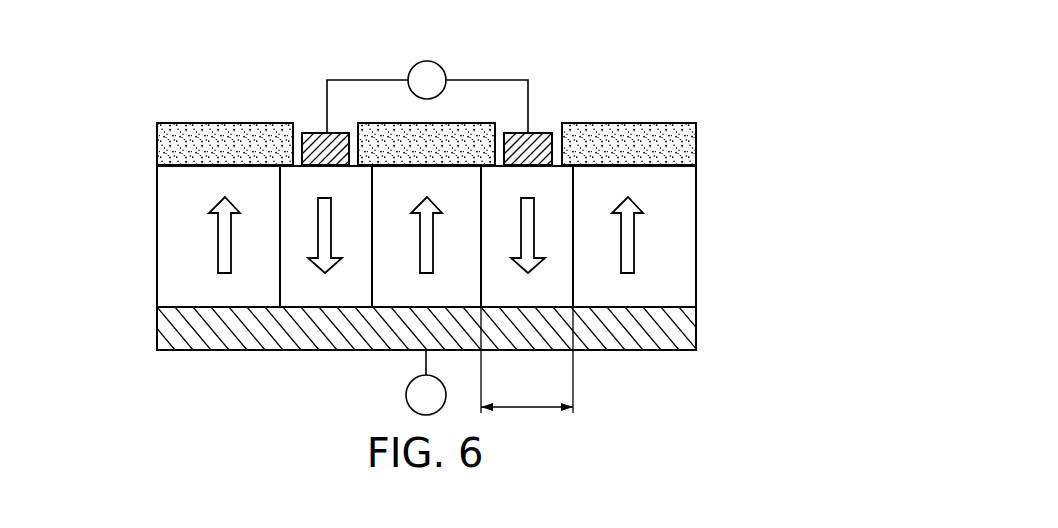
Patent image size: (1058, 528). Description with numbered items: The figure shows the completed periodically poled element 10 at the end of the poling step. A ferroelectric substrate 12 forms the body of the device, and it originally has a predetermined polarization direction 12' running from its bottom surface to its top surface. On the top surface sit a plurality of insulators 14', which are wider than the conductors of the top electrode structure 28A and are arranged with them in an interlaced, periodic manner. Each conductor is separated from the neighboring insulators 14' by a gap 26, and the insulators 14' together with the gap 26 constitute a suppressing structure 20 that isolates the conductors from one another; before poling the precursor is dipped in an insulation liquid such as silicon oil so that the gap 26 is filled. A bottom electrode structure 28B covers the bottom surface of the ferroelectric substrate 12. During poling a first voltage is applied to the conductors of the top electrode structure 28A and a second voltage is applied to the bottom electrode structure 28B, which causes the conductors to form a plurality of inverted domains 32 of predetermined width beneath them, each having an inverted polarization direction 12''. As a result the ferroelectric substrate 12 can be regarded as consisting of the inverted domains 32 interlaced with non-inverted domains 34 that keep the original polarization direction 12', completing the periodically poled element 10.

The periodically poled element 10 is at (672, 77).
The ferroelectric substrate 12 is at (424, 285).
The predetermined polarization direction 12' is at (365, 235).
The inverted polarization direction 12'' is at (410, 301).
The insulators 14' is at (461, 115).
The suppressing structure 20 is at (207, 67).
The gap 26 is at (298, 143).
The top electrode structure 28A is at (537, 133).
The bottom electrode structure 28B is at (167, 332).
The inverted domains 32 is at (342, 288).
The non-inverted domains 34 is at (687, 273).